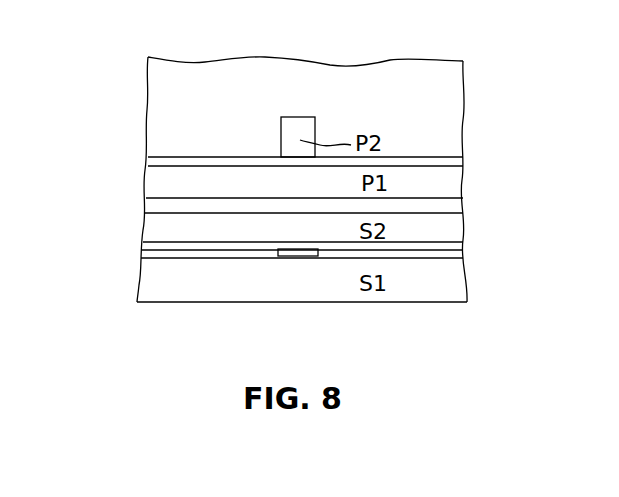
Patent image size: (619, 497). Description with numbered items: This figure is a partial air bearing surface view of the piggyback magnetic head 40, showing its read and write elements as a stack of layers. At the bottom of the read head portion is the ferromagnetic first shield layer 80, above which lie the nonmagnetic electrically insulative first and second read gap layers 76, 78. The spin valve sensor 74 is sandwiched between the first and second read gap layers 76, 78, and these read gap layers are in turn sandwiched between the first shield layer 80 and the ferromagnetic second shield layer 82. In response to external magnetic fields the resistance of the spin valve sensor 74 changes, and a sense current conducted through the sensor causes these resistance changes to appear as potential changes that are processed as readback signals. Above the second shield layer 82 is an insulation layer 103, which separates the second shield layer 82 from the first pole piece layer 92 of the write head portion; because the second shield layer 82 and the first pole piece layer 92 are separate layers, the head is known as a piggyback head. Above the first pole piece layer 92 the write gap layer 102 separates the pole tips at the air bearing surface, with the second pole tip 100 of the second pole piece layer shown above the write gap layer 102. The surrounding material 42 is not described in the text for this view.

The piggyback magnetic head 40 is at (484, 77).
The interlayer dielectric 42 is at (150, 85).
The second pole tip 100 is at (295, 125).
The write gap layer 102 is at (216, 158).
The first pole piece layer 92 is at (142, 181).
The insulation layer 103 is at (455, 208).
The second shield layer 82 is at (142, 232).
The first shield layer 80 is at (455, 285).
The second read gap layer 78 is at (425, 290).
The first read gap layer 76 is at (205, 292).
The spin valve sensor 74 is at (298, 290).